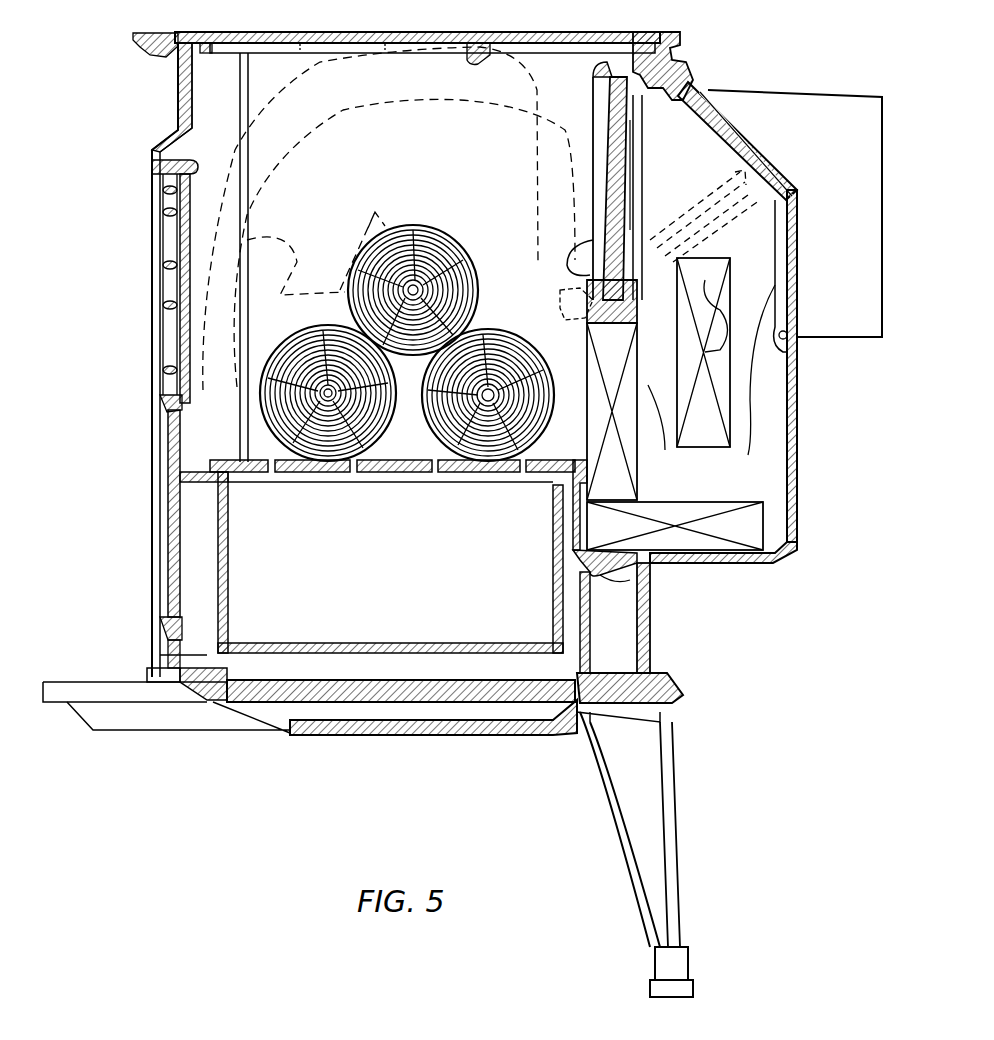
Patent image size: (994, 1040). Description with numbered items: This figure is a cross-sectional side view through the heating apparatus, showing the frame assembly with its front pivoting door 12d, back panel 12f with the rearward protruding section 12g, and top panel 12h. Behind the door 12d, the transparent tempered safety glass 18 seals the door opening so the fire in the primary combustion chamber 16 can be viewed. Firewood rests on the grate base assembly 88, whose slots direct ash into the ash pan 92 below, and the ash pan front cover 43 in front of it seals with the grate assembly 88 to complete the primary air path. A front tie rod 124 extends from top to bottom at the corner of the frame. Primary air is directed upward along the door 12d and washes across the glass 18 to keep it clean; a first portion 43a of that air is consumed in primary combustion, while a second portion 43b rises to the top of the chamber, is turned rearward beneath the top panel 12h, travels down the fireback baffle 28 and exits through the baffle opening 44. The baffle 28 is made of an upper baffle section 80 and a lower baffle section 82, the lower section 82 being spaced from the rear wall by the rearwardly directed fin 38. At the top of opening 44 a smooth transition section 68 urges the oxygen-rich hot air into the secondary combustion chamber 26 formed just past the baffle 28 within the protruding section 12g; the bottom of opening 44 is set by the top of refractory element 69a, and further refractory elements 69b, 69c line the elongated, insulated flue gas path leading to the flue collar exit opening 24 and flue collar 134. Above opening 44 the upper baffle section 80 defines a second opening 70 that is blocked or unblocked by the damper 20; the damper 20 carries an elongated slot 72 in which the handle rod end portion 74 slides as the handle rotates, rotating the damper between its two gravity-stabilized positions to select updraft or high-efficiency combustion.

The front pivoting door 12d is at (153, 277).
The back panel 12f is at (652, 642).
The protruding section 12g is at (798, 490).
The top panel 12h is at (483, 735).
The primary combustion chamber 16 is at (470, 216).
The tempered safety glass 18 is at (196, 202).
The damper 20 is at (617, 153).
The flue collar exit opening 24 is at (762, 146).
The secondary combustion chamber 26 is at (670, 361).
The fireback baffle 28 is at (590, 75).
The rearwardly directed fin 38 is at (630, 582).
The ash pan front cover 43 is at (190, 512).
The first portion of primary air 43a is at (327, 217).
The second portion of primary air 43b is at (377, 103).
The baffle opening 44 is at (565, 302).
The smooth transition section 68 is at (578, 290).
The refractory element 69a is at (586, 348).
The refractory element 69b is at (735, 550).
The refractory element 69c is at (725, 417).
The second opening 70 is at (593, 145).
The elongated slot 72 is at (623, 135).
The handle rod end portion 74 is at (653, 197).
The upper baffle section 80 is at (592, 96).
The lower baffle section 82 is at (555, 578).
The grate base assembly 88 is at (382, 472).
The ash pan 92 is at (300, 652).
The front tie rod 124 is at (252, 92).
The flue collar 134 is at (795, 90).